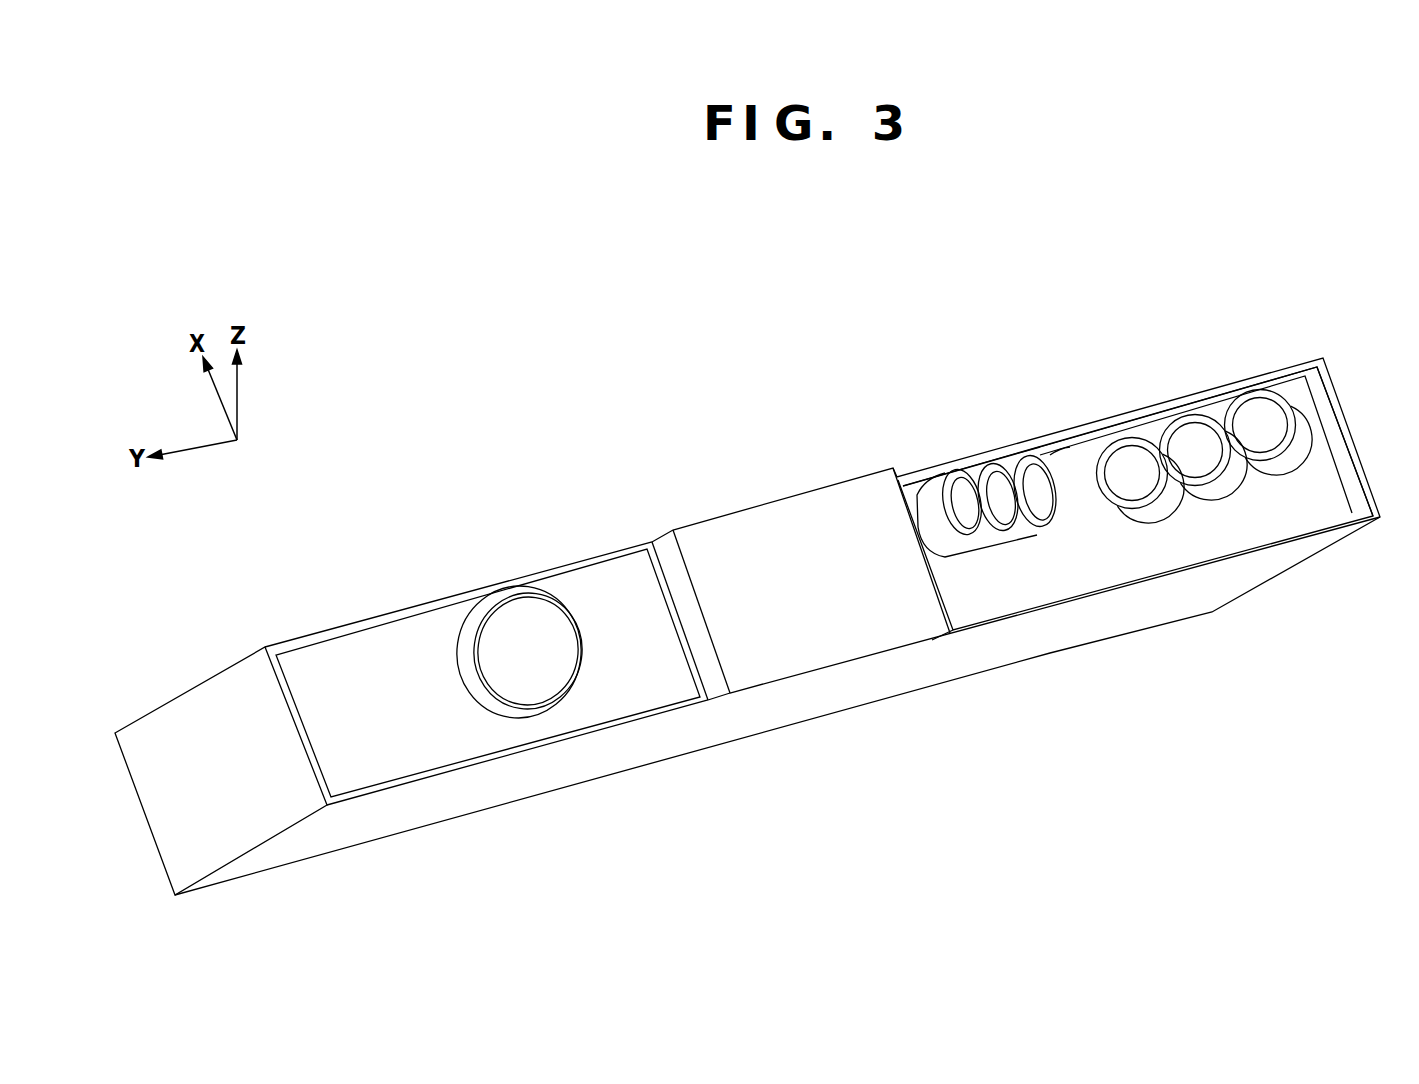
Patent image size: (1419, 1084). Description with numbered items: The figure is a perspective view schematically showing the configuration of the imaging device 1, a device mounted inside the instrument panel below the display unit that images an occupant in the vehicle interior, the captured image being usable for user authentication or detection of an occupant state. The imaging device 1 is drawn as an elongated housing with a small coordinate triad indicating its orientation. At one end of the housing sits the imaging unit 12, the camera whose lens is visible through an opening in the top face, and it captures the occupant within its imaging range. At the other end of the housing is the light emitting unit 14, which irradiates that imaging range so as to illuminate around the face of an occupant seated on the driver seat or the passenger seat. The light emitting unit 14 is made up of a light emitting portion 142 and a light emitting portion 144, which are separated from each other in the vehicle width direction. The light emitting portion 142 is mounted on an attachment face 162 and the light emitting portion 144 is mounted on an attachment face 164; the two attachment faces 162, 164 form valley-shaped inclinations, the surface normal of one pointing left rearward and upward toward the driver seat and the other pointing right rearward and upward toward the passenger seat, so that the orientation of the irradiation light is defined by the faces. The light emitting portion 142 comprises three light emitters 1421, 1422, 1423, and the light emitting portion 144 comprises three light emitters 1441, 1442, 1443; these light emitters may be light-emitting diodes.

The imaging device 1 is at (367, 483).
The imaging unit 12 is at (312, 638).
The light emitting unit 14 is at (1040, 360).
The light emitting portion 142 is at (1172, 358).
The light emitting portion 144 is at (918, 403).
The attachment face 162 is at (1147, 430).
The attachment face 164 is at (1052, 452).
The light emitter 1421 is at (1153, 500).
The light emitter 1422 is at (1210, 477).
The light emitter 1423 is at (1273, 458).
The light emitter 1441 is at (1043, 526).
The light emitter 1442 is at (1008, 530).
The light emitter 1443 is at (973, 534).